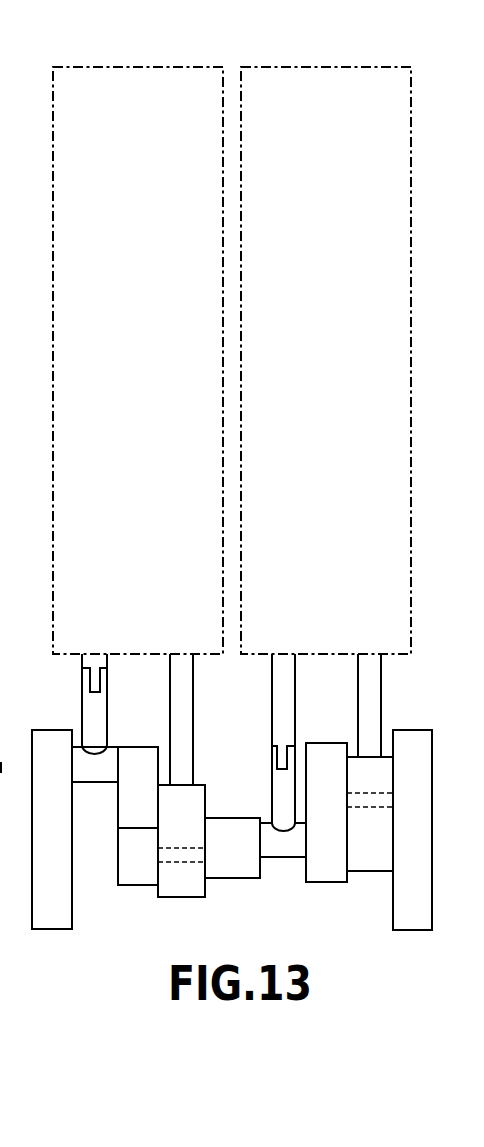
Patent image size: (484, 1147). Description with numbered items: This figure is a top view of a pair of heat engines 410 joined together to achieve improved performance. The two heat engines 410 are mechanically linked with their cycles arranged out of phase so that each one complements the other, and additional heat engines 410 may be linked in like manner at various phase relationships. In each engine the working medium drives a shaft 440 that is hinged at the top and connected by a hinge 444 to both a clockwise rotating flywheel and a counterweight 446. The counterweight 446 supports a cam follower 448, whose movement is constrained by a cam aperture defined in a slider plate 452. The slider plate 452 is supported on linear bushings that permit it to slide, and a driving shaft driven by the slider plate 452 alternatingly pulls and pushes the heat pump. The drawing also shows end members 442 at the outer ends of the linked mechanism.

The heat engine 410 is at (141, 66).
The shaft 440 is at (82, 689).
The end flange 442 is at (52, 930).
The hinge 444 is at (98, 783).
The counterweight 446 is at (137, 886).
The cam follower 448 is at (179, 865).
The slider plate 452 is at (207, 888).